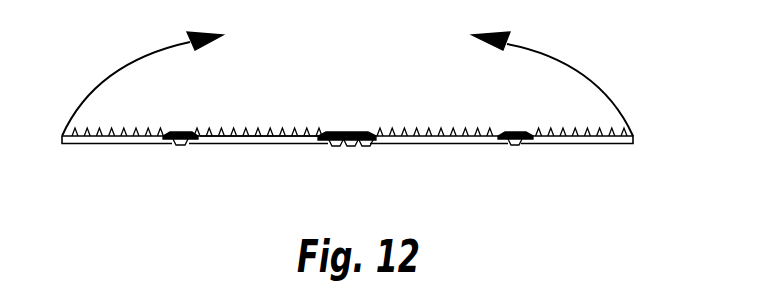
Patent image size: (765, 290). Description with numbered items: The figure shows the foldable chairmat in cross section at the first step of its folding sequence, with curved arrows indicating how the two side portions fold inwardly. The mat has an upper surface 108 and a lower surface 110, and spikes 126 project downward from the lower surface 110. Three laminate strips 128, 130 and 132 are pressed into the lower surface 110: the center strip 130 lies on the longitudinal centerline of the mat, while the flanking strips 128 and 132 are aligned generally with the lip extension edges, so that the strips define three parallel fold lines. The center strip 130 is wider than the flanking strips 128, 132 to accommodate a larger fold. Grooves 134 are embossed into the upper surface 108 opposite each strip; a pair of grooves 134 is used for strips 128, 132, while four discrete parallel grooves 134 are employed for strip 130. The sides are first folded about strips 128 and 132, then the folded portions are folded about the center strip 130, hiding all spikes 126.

The upper surface 108 is at (610, 145).
The lower surface 110 is at (433, 131).
The spikes 126 is at (246, 130).
The laminate strip 128 is at (180, 134).
The center laminate strip 130 is at (346, 136).
The laminate strip 132 is at (515, 134).
The grooves 134 is at (187, 145).